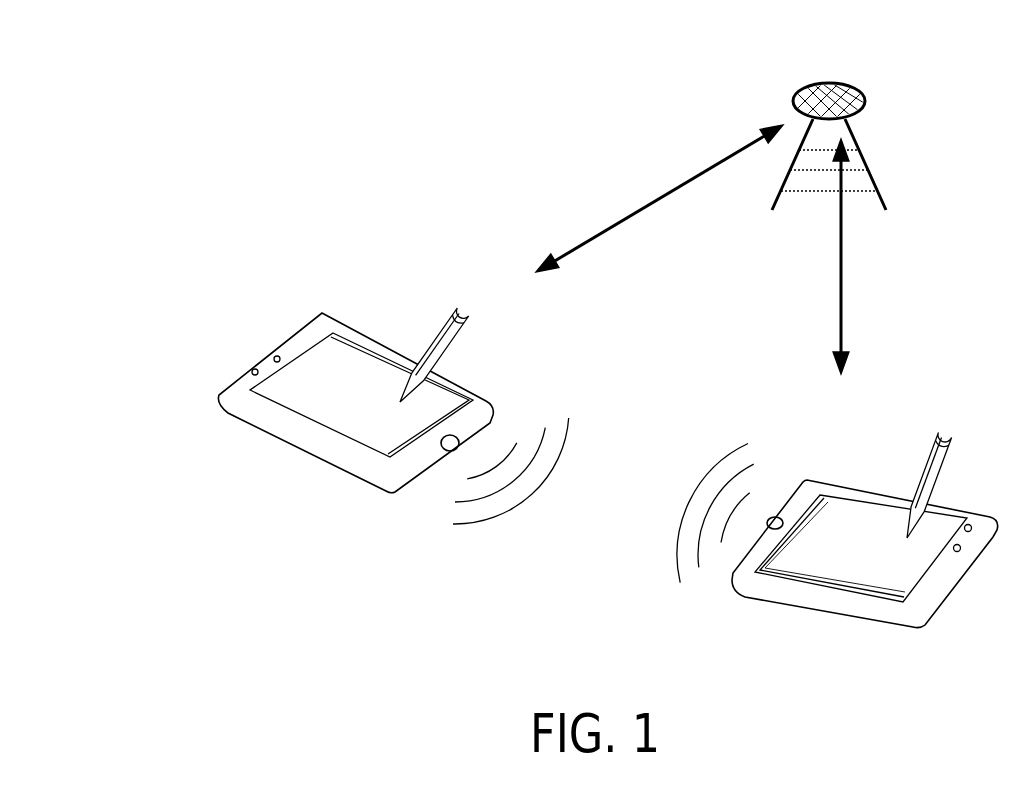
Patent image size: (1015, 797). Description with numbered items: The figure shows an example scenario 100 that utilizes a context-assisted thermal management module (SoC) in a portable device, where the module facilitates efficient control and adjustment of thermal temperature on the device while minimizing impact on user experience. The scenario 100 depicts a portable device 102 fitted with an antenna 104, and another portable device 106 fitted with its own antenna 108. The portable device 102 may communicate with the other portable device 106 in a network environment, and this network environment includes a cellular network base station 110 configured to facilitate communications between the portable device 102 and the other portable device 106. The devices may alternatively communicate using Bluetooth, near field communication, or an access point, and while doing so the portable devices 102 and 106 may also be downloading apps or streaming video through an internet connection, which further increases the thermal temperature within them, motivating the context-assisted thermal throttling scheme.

The example scenario 100 is at (103, 78).
The portable device 102 is at (238, 337).
The antenna 104 is at (493, 395).
The other portable device 106 is at (745, 628).
The antenna 108 is at (783, 500).
The cellular network base station 110 is at (800, 80).